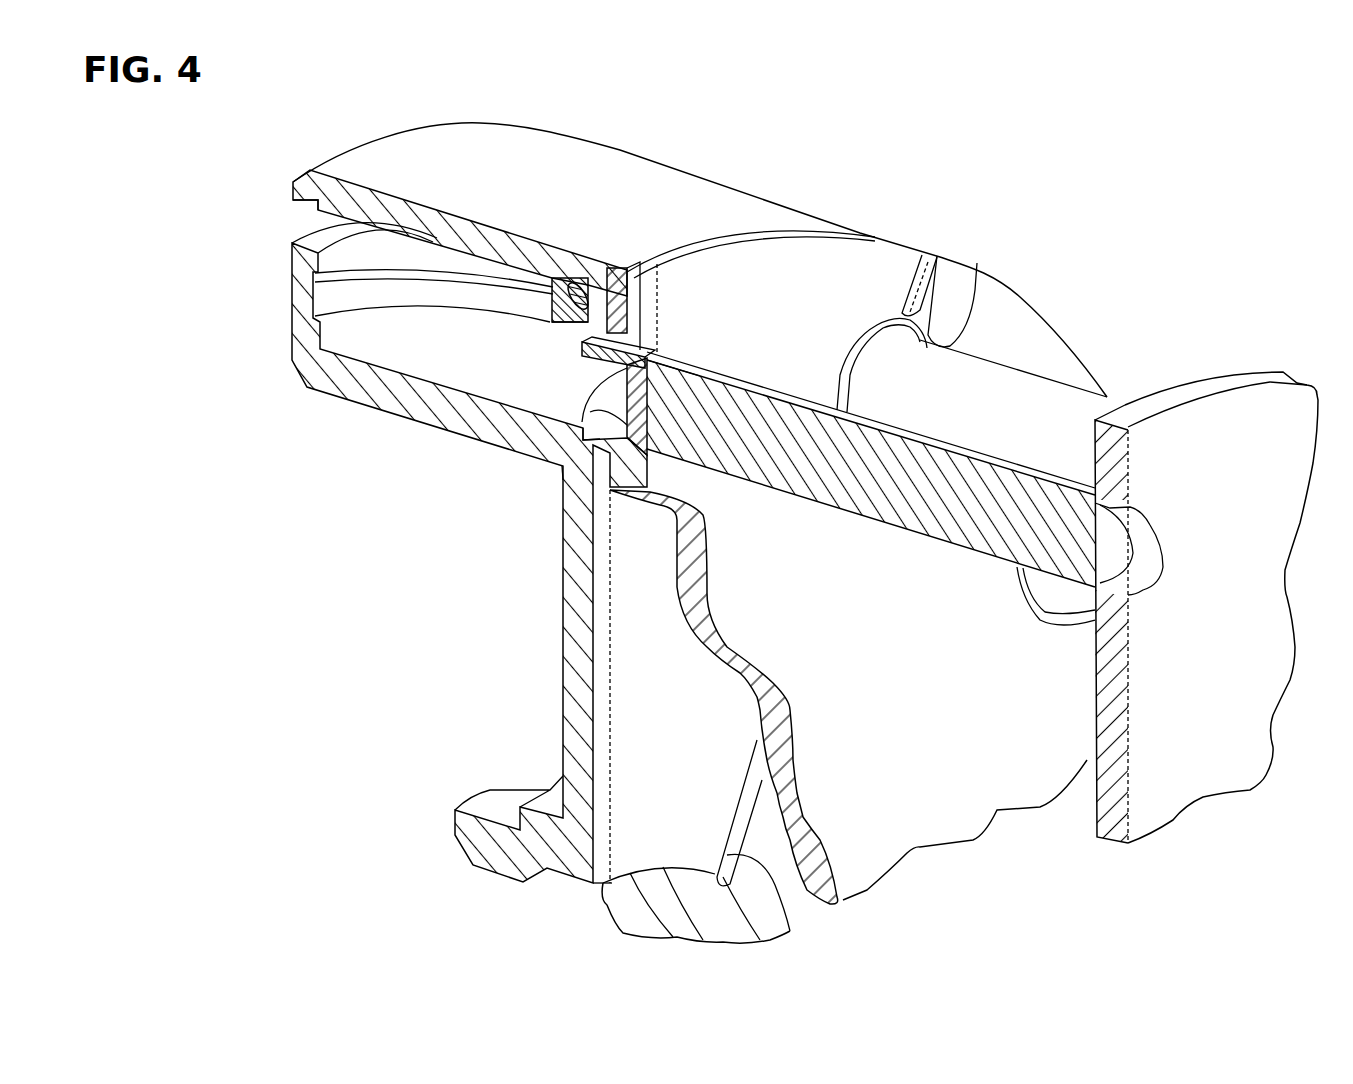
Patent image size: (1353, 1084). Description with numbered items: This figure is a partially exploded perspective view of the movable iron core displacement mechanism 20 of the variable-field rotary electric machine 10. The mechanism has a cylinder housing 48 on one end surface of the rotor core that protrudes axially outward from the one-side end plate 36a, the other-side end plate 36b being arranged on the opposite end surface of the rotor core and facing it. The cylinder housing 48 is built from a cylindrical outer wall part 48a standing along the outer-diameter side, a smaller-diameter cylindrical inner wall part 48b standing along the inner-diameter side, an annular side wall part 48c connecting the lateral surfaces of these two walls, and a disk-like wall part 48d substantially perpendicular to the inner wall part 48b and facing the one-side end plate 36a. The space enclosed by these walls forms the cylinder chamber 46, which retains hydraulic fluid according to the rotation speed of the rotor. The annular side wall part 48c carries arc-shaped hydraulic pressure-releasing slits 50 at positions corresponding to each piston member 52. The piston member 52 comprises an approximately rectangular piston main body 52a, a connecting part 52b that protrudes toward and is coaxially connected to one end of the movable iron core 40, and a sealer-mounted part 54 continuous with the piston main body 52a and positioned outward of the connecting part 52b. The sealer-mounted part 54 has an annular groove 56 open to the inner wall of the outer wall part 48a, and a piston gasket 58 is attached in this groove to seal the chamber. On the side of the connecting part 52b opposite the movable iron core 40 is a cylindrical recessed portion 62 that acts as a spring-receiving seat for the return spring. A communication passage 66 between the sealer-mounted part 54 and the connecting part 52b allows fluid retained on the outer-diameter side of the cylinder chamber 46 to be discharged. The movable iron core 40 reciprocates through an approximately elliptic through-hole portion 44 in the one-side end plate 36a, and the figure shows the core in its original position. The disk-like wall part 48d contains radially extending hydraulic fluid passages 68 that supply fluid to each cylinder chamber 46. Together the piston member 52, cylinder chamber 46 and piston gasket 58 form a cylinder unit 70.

The variable-field rotary electric machine 10 is at (1022, 150).
The movable iron core displacement mechanism 20 is at (552, 118).
The one-side end plate 36a is at (877, 817).
The other-side end plate 36b is at (1163, 773).
The movable iron core 40 is at (875, 500).
The through-hole portion 44 is at (692, 360).
The cylinder chamber 46 is at (464, 367).
The cylinder housing 48 is at (431, 494).
The outer wall part 48a is at (462, 214).
The inner wall part 48b is at (388, 400).
The annular side wall part 48c is at (298, 312).
The disk-like wall part 48d is at (570, 590).
The hydraulic pressure-releasing slit 50 is at (304, 212).
The piston member 52 is at (639, 358).
The piston main body 52a is at (583, 425).
The connecting part 52b is at (666, 370).
The sealer-mounted part 54 is at (557, 277).
The annular groove 56 is at (552, 322).
The piston gasket 58 is at (582, 282).
The recessed portion 62 is at (566, 472).
The communication passage 66 is at (590, 350).
The hydraulic fluid passage 68 is at (930, 257).
The cylinder unit 70 is at (275, 360).